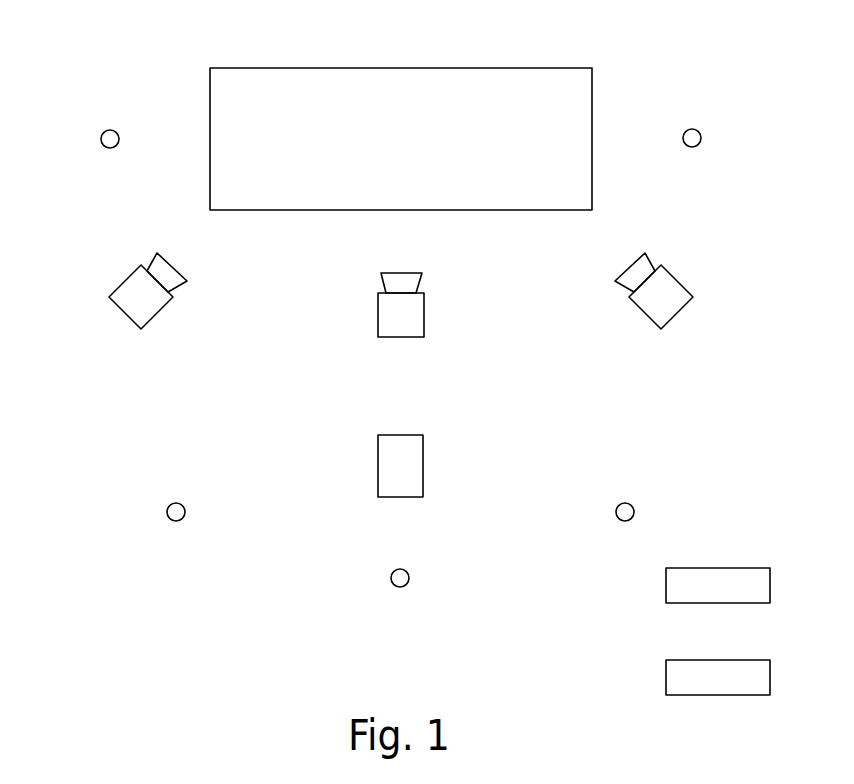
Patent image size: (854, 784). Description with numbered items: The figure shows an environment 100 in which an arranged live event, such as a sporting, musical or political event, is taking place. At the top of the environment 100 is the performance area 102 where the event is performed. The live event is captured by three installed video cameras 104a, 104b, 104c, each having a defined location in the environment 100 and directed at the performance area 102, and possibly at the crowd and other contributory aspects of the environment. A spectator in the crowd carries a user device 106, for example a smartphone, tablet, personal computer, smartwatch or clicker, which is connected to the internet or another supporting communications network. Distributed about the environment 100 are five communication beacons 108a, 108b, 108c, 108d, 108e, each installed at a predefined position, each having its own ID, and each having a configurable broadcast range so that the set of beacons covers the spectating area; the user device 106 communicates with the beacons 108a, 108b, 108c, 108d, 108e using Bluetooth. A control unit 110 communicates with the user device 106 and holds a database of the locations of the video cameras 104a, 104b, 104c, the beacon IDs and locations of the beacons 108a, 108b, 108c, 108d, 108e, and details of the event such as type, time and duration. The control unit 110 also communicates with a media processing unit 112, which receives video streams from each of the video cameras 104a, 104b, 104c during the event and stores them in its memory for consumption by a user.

The environment 100 is at (88, 611).
The performance area 102 is at (475, 68).
The video camera 104a is at (125, 281).
The video camera 104b is at (415, 272).
The video camera 104c is at (678, 280).
The user device 106 is at (410, 435).
The communication beacon 108a is at (110, 130).
The communication beacon 108b is at (178, 503).
The communication beacon 108c is at (405, 570).
The communication beacon 108d is at (627, 503).
The communication beacon 108e is at (694, 129).
The control unit 110 is at (747, 568).
The media processing unit 112 is at (747, 660).